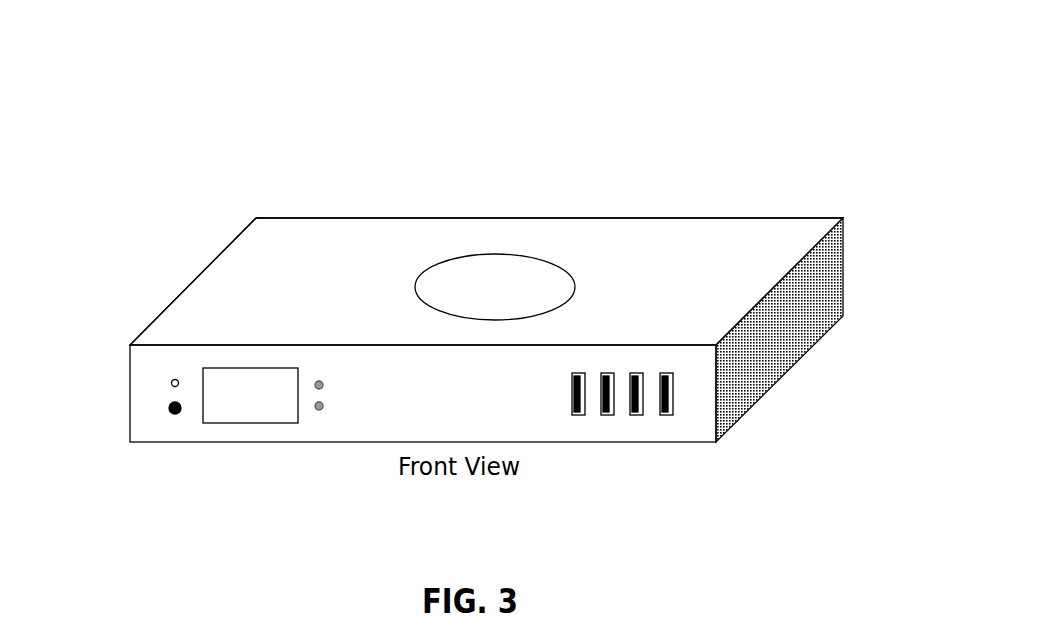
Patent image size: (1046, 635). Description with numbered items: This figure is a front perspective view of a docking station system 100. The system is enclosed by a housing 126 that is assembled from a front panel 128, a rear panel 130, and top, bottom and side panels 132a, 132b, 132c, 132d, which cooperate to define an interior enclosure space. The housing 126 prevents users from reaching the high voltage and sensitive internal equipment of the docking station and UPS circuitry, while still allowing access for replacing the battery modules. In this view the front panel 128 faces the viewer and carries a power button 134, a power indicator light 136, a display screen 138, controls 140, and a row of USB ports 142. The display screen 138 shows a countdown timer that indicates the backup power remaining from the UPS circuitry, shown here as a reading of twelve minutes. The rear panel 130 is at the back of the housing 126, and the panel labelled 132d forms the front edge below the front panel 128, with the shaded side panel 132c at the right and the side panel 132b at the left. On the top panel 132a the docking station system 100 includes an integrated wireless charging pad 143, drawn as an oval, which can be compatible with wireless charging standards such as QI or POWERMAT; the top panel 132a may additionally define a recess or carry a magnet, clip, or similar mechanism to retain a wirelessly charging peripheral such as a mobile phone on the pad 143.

The docking station system 100 is at (457, 275).
The housing 126 is at (255, 218).
The front panel 128 is at (694, 423).
The rear panel 130 is at (803, 215).
The top panel 132a is at (672, 287).
The side panel 132b is at (160, 310).
The side panel 132c is at (737, 349).
The bottom panel 132d is at (342, 443).
The power button 134 is at (169, 414).
The power indicator light 136 is at (171, 383).
The display screen 138 is at (235, 424).
The controls 140 is at (313, 413).
The USB ports 142 is at (580, 415).
The integrated wireless charging pad 143 is at (462, 295).